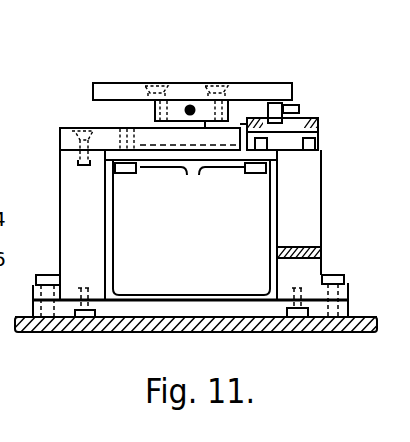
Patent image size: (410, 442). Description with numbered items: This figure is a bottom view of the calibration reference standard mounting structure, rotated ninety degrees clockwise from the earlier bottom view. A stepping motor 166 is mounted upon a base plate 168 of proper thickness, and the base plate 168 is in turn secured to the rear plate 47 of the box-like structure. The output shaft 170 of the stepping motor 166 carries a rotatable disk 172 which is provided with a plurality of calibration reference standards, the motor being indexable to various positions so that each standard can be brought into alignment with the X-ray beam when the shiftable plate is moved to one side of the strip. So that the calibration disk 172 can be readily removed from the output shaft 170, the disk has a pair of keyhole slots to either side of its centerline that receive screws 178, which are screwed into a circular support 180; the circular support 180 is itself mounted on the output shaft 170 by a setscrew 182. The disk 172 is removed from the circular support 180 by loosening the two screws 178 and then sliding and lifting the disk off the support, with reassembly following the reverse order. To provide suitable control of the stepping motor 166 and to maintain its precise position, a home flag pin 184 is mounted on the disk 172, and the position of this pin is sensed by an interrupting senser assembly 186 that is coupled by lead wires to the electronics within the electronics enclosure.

The rear plate 47 is at (68, 318).
The stepping motor 166 is at (214, 250).
The base plate 168 is at (126, 314).
The output shaft 170 is at (185, 125).
The rotatable disk 172 is at (116, 84).
The screws 178 is at (145, 85).
The circular support 180 is at (150, 108).
The setscrew 182 is at (191, 104).
The home flag pin 184 is at (296, 107).
The interrupting senser assembly 186 is at (300, 97).